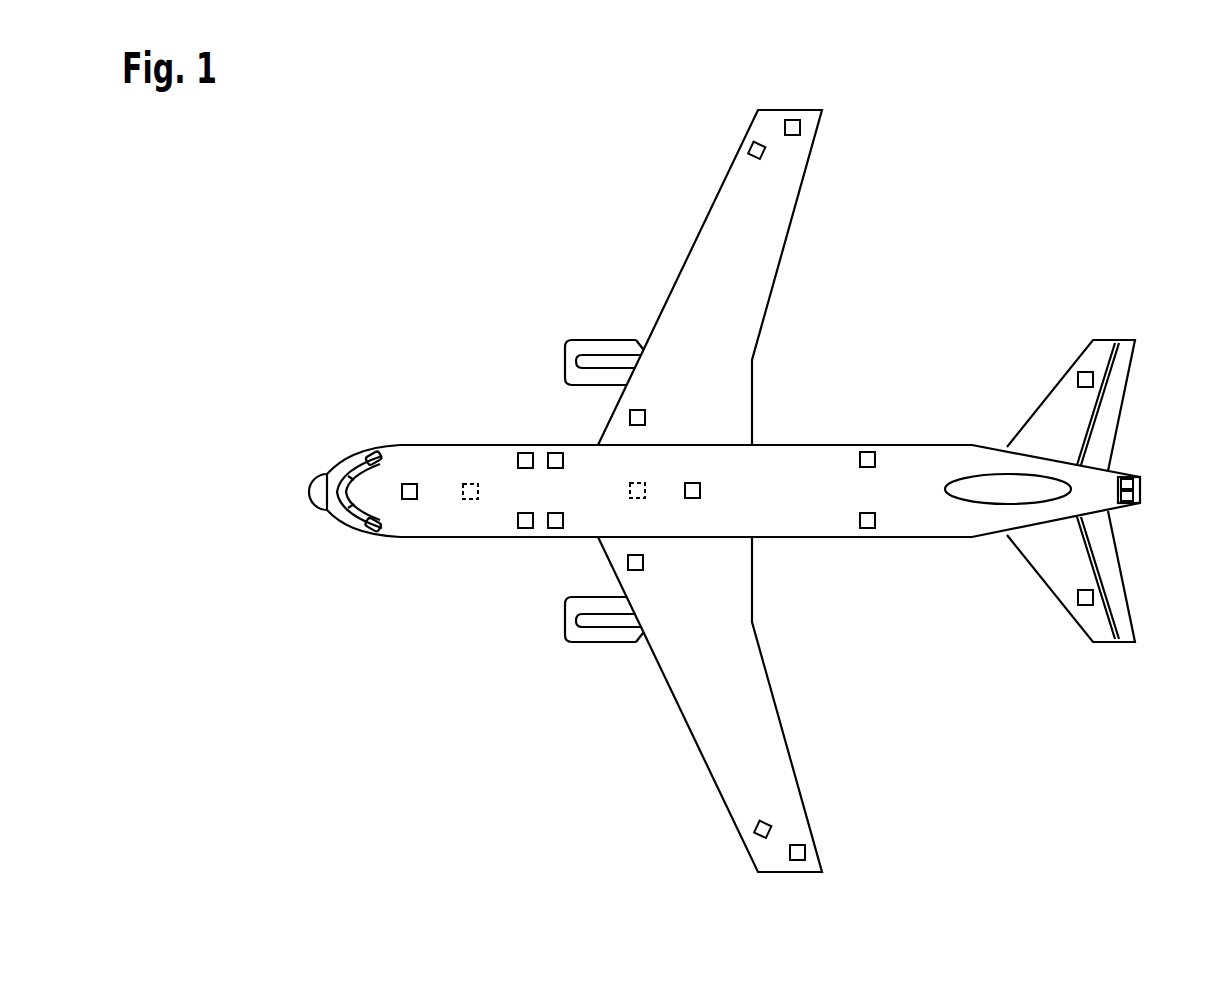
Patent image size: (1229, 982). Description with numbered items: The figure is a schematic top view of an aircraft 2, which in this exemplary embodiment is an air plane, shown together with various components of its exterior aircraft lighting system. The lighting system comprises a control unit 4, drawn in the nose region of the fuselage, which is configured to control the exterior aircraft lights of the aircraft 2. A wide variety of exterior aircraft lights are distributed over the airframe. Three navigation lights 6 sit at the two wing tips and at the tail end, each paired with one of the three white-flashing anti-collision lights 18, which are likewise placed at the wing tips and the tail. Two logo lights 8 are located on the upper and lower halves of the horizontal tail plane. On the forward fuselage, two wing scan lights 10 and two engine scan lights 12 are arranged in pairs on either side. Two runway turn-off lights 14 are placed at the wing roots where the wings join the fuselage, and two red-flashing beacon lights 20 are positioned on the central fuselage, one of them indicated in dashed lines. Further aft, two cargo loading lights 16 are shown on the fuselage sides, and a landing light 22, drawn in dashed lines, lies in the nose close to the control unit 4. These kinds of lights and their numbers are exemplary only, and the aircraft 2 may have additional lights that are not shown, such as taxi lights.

The aircraft 2 is at (1042, 236).
The control unit 4 is at (408, 484).
The navigation lights 6 is at (750, 151).
The logo lights 8 is at (1078, 379).
The wing scan lights 10 is at (526, 453).
The engine scan lights 12 is at (555, 453).
The runway turn-off lights 14 is at (645, 418).
The cargo loading lights 16 is at (868, 452).
The white-flashing anti-collision lights 18 is at (800, 128).
The red-flashing beacon lights 20 is at (640, 482).
The landing light 22 is at (470, 499).